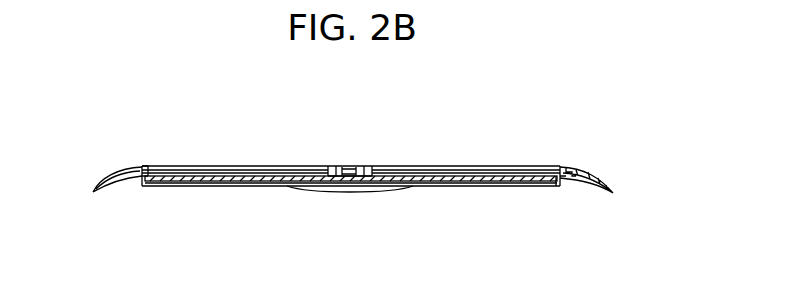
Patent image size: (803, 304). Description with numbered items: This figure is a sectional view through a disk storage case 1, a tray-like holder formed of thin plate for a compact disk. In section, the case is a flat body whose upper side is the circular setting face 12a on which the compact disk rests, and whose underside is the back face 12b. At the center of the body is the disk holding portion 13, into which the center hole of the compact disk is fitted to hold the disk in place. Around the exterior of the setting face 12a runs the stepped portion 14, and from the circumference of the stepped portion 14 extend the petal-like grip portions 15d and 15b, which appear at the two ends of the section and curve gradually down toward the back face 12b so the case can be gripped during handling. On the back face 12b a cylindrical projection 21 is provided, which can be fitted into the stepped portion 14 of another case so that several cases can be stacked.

The disk storage case 1 is at (542, 150).
The disk holding portion 13 is at (362, 150).
The stepped portion 14 is at (146, 166).
The setting face 12a is at (250, 170).
The back face 12b is at (461, 187).
The grip portion 15d is at (101, 172).
The grip portion 15b is at (600, 168).
The projection 21 is at (563, 188).